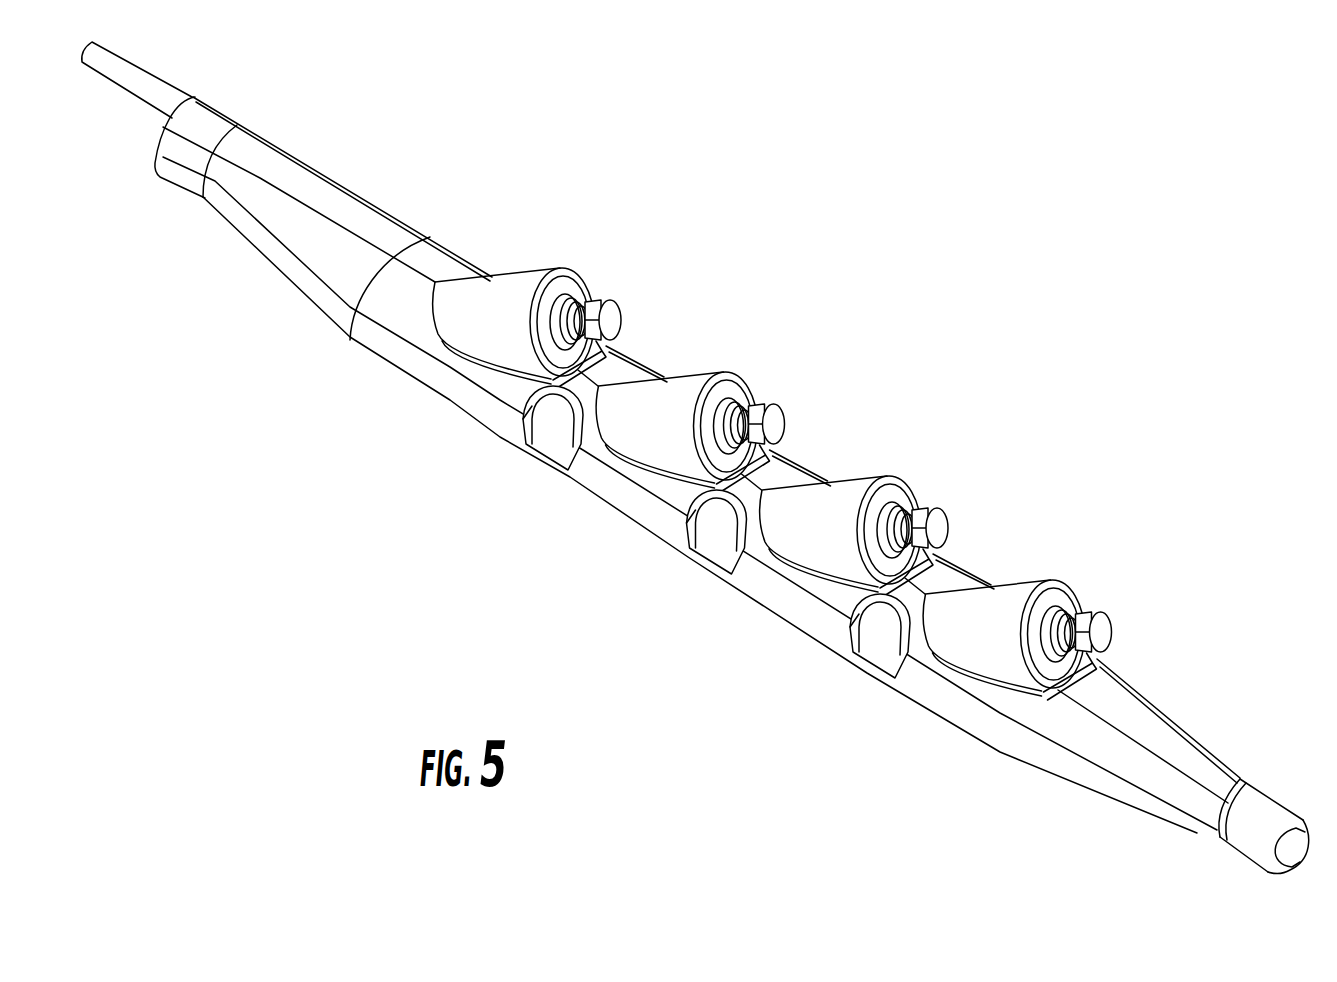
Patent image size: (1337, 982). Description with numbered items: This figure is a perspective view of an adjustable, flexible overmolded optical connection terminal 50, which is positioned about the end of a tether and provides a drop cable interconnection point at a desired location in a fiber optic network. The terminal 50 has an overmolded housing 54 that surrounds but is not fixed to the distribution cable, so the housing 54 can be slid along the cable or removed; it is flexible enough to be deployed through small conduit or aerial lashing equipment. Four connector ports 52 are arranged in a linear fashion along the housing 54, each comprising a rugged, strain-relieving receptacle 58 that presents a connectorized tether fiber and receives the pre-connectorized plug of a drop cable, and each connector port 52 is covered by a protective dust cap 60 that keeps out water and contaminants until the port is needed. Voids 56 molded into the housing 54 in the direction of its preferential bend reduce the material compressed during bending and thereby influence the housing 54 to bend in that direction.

The optical connection terminal 50 is at (695, 458).
The connector port 52 is at (1040, 553).
The housing 54 is at (298, 187).
The voids 56 is at (865, 638).
The receptacle 58 is at (1060, 600).
The protective dust cap 60 is at (1102, 632).